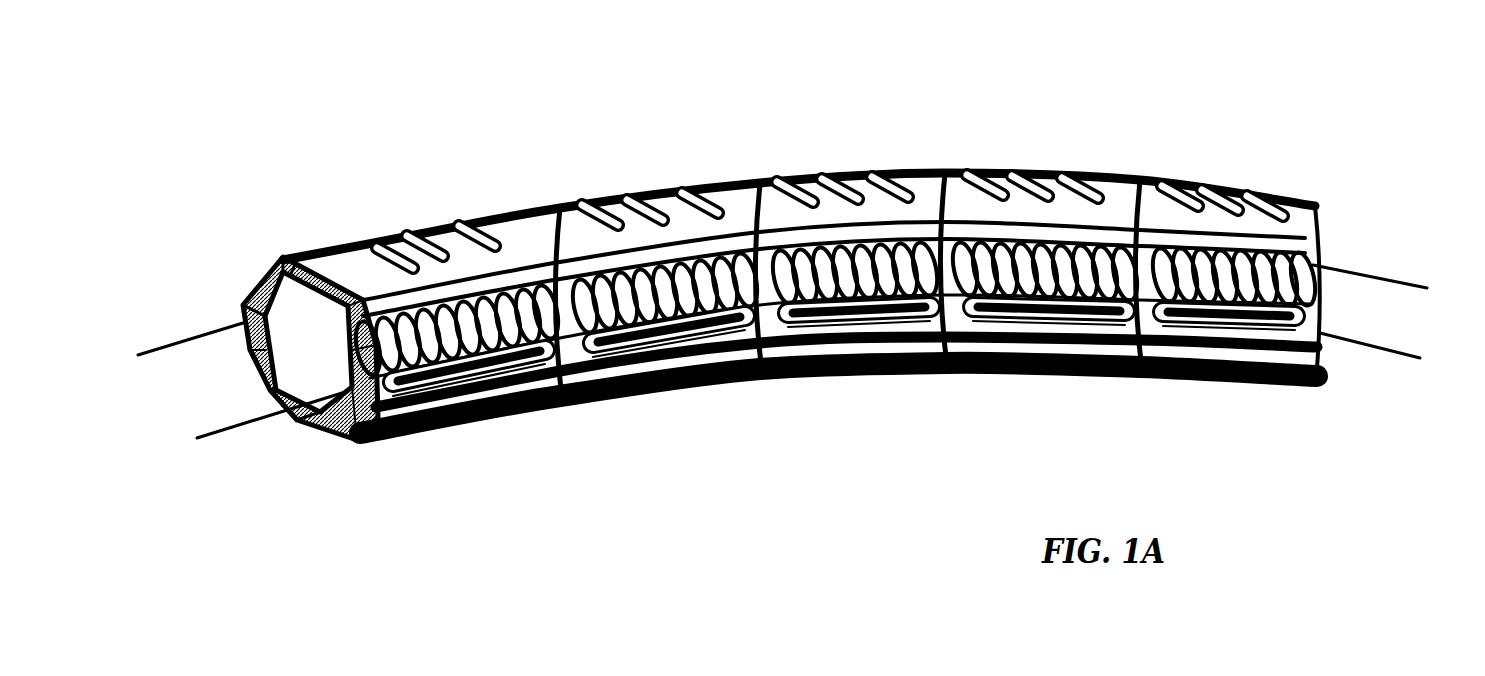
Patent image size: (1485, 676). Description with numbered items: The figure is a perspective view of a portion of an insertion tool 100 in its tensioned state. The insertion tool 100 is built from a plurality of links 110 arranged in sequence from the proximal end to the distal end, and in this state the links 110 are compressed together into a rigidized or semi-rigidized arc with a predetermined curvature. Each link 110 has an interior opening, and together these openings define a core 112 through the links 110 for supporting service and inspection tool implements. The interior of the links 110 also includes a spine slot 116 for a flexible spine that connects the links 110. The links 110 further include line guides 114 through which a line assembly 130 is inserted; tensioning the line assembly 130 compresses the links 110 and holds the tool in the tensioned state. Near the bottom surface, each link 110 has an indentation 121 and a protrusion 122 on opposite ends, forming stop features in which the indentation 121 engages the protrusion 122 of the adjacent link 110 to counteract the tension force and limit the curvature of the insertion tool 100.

The insertion tool 100 is at (1076, 114).
The links 110 is at (424, 223).
The core 112 is at (307, 433).
The line guides 114 is at (243, 300).
The spine slot 116 is at (280, 262).
The indentation 121 is at (258, 392).
The protrusion 122 is at (573, 390).
The line assembly 130 is at (175, 345).